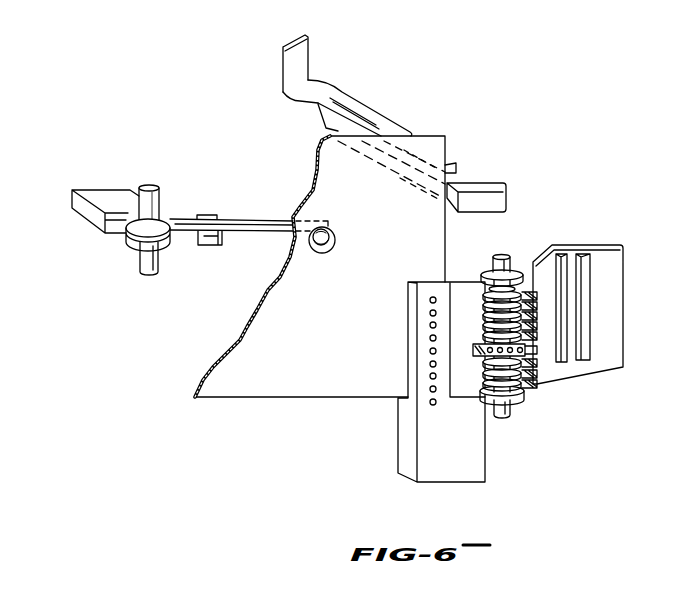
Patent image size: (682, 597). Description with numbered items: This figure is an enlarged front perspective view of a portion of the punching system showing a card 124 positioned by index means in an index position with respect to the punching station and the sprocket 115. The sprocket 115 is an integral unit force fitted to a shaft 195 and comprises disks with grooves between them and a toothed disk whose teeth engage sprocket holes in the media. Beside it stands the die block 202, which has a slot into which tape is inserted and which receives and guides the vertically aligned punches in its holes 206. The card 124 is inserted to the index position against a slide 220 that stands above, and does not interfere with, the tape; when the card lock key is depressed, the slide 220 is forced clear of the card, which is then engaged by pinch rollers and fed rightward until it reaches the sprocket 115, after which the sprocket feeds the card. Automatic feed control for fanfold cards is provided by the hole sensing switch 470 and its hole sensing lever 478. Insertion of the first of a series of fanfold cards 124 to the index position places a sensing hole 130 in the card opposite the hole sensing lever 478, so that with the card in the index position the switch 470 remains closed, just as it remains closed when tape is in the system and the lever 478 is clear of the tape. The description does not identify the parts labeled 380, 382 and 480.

The sprocket 115 is at (594, 211).
The card 124 is at (250, 397).
The sensing hole 130 is at (336, 247).
The shaft 195 is at (508, 417).
The die block 202 is at (473, 475).
The holes 206 is at (435, 405).
The slide 220 is at (326, 84).
The disc stack 380 is at (481, 283).
The flange 382 is at (493, 404).
The hole sensing switch 470 is at (71, 202).
The hole sensing lever 478 is at (242, 218).
The clip 480 is at (212, 247).